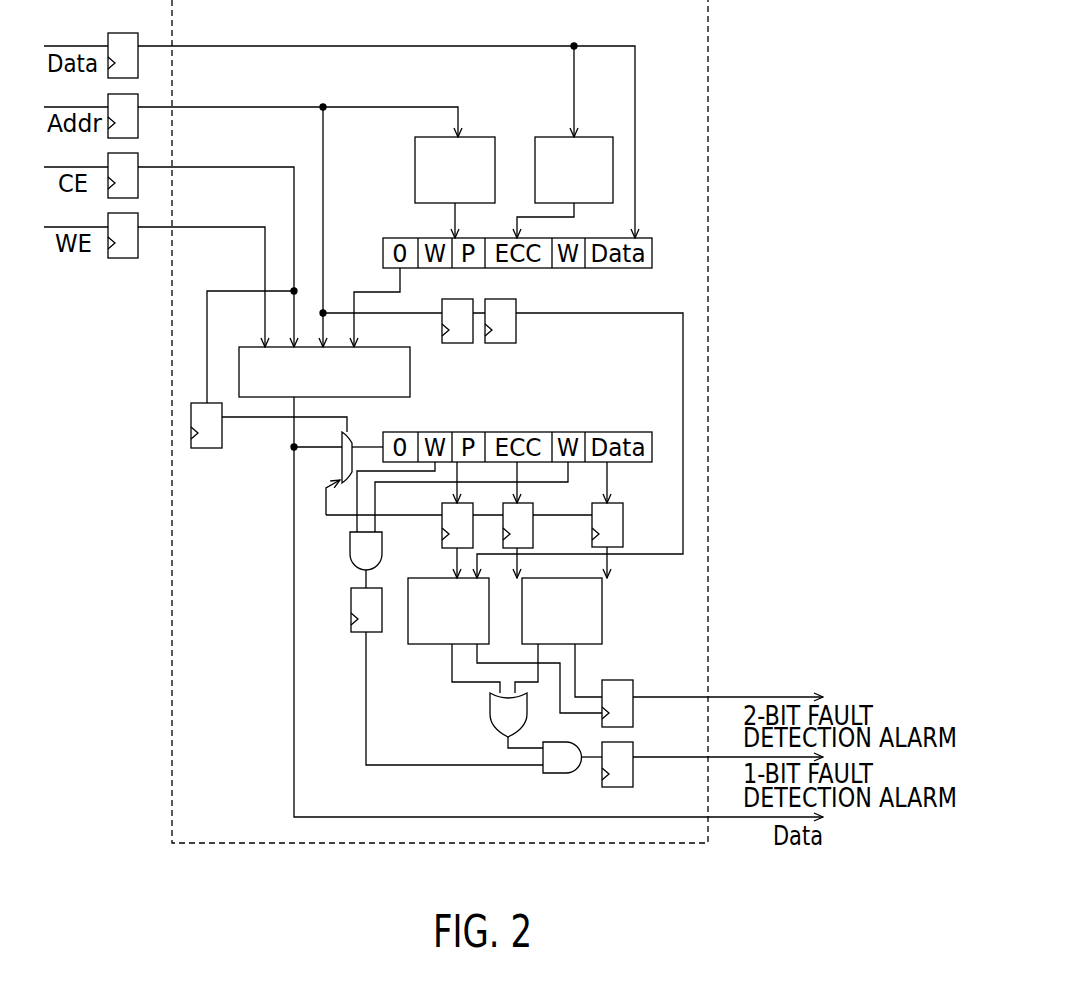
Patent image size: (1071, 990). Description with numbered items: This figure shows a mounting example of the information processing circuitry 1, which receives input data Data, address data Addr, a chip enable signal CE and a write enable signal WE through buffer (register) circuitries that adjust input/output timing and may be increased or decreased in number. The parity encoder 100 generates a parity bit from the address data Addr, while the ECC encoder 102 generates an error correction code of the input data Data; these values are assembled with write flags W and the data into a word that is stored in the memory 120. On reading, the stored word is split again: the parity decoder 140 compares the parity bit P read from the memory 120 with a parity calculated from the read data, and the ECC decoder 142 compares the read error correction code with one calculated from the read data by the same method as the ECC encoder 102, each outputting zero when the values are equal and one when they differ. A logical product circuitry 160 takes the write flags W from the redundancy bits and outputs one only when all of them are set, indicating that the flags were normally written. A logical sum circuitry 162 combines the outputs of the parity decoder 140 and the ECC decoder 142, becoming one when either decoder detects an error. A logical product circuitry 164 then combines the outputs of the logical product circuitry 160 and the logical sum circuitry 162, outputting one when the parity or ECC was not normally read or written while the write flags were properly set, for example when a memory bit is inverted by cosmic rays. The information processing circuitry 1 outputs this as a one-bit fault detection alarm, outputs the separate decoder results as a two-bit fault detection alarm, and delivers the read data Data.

The information processing circuitry 1 is at (710, 30).
The parity encoder 100 is at (481, 136).
The ECC encoder 102 is at (599, 136).
The memory 120 is at (413, 372).
The parity decoder 140 is at (423, 645).
The ECC decoder 142 is at (604, 615).
The logical product circuitry 160 is at (350, 547).
The logical sum circuitry 162 is at (492, 732).
The logical product circuitry 164 is at (538, 773).